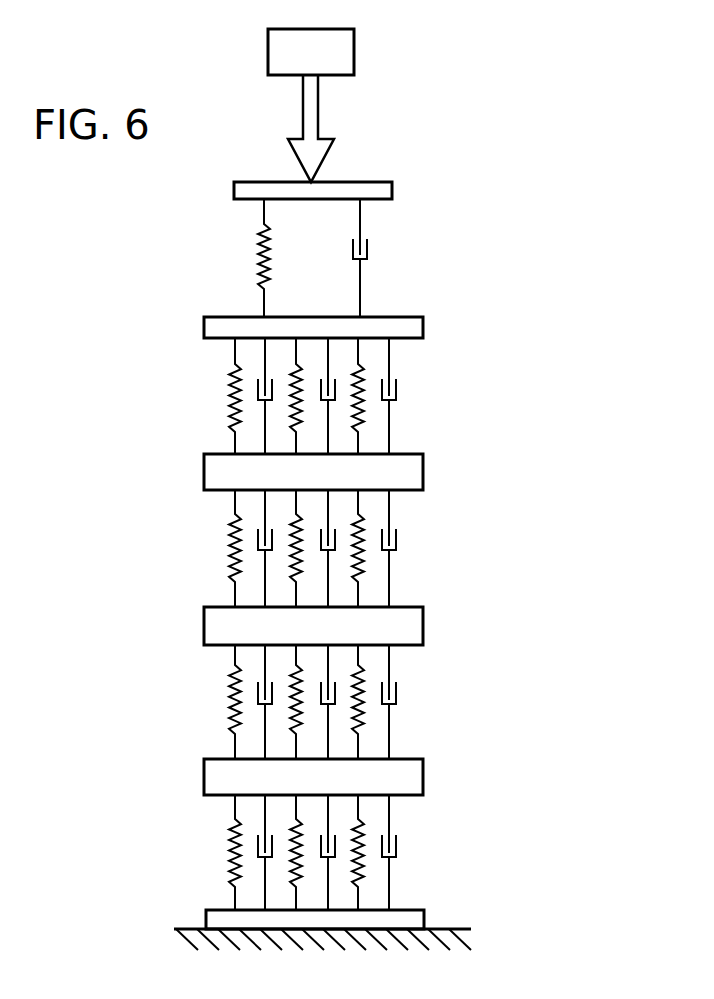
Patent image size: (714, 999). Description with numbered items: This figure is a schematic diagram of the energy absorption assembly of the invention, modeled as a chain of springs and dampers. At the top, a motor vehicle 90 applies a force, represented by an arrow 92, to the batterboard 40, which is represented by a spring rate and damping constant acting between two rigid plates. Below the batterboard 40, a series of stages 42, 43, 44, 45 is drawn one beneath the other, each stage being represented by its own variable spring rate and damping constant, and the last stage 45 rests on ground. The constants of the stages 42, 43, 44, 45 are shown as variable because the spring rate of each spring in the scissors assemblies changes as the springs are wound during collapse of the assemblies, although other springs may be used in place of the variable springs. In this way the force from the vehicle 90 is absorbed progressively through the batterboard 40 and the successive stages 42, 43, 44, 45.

The motor vehicle 90 is at (353, 43).
The arrow 92 is at (317, 113).
The batterboard 40 is at (435, 197).
The stage 42 is at (435, 336).
The stage 43 is at (435, 488).
The stage 44 is at (435, 643).
The stage 45 is at (435, 793).